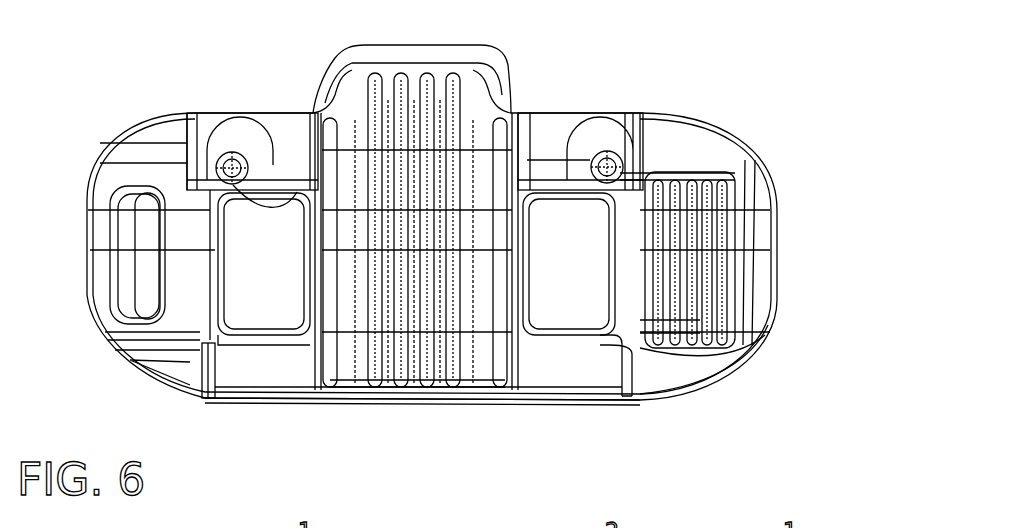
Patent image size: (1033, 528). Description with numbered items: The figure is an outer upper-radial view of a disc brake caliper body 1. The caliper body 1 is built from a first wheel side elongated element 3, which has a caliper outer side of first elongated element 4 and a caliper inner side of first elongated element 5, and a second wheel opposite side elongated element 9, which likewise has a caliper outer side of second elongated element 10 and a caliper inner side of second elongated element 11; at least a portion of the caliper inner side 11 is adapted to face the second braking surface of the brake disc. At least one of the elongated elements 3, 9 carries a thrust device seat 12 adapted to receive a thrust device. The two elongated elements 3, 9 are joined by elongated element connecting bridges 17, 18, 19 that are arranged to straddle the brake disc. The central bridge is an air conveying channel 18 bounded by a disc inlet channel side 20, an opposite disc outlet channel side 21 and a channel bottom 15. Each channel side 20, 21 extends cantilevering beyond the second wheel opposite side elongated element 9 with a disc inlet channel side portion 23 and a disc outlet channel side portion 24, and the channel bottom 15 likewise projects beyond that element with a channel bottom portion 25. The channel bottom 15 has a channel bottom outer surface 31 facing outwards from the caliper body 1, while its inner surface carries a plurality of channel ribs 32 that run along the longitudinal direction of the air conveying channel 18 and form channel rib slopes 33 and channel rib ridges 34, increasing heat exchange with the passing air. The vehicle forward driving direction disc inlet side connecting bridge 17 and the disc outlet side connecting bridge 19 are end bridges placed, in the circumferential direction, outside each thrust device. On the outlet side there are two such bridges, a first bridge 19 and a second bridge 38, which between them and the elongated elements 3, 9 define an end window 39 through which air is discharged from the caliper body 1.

The caliper body 1 is at (660, 97).
The first wheel side elongated element 3 is at (570, 387).
The caliper outer side of first elongated element 4 is at (348, 405).
The caliper inner side of first elongated element 5 is at (275, 318).
The second wheel opposite side elongated element 9 is at (560, 113).
The caliper outer side of second elongated element 10 is at (233, 113).
The caliper inner side of second elongated element 11 is at (222, 158).
The thrust device seat 12 is at (278, 185).
The channel bottom 15 is at (422, 210).
The elongated element connecting bridge 17 is at (700, 273).
The air conveying channel 18 is at (443, 283).
The elongated element connecting bridge 19 is at (107, 310).
The disc inlet channel side 20 is at (517, 237).
The disc outlet channel side 21 is at (260, 265).
The disc inlet channel side portion 23 is at (510, 65).
The disc outlet channel side portion 24 is at (328, 110).
The channel bottom portion 25 is at (427, 45).
The channel bottom outer surface 31 is at (400, 250).
The channel ribs 32 is at (418, 312).
The channel rib slopes 33 is at (705, 310).
The channel rib ridges 34 is at (680, 340).
The second vehicle forward driving direction disc outlet side elongated element conn 38 is at (264, 264).
The end window 39 is at (143, 253).